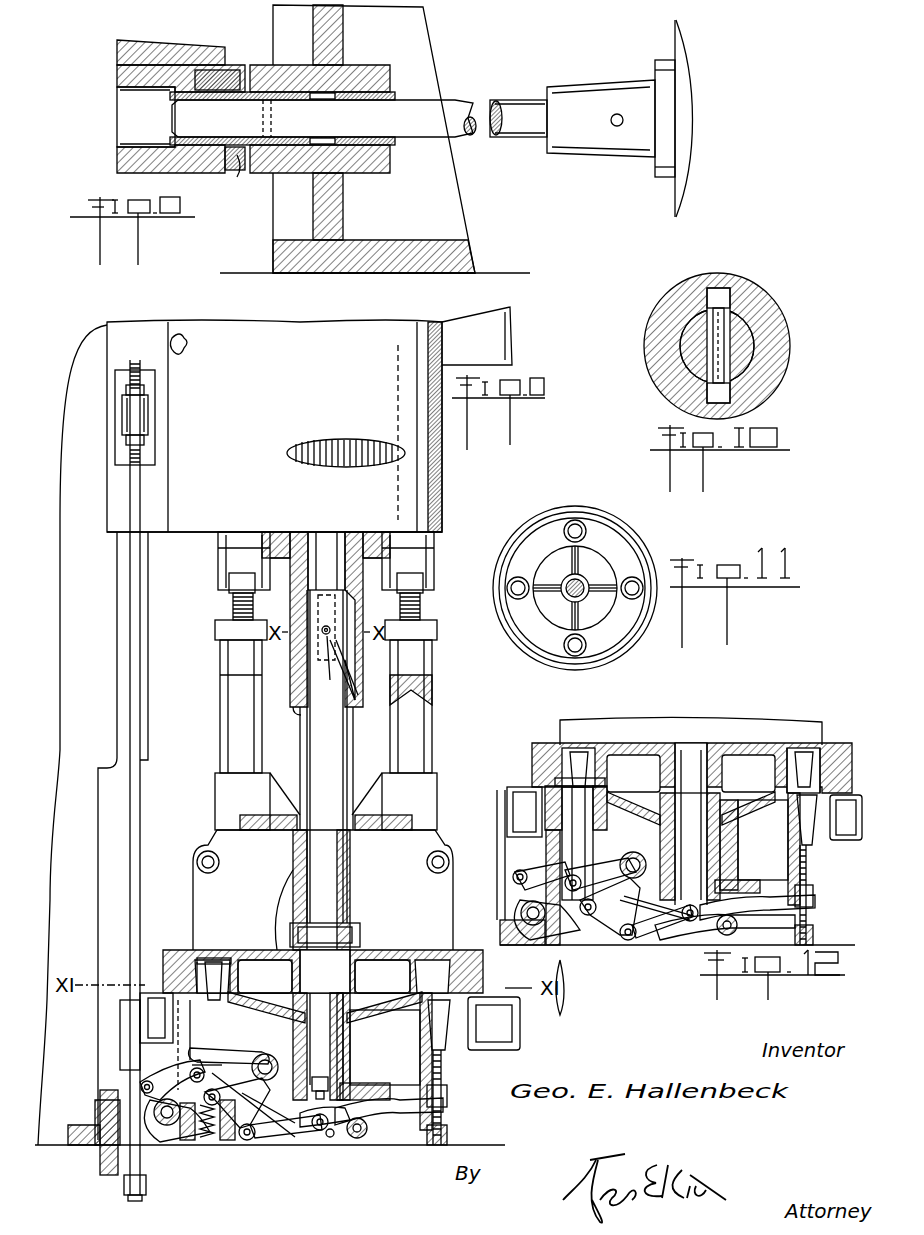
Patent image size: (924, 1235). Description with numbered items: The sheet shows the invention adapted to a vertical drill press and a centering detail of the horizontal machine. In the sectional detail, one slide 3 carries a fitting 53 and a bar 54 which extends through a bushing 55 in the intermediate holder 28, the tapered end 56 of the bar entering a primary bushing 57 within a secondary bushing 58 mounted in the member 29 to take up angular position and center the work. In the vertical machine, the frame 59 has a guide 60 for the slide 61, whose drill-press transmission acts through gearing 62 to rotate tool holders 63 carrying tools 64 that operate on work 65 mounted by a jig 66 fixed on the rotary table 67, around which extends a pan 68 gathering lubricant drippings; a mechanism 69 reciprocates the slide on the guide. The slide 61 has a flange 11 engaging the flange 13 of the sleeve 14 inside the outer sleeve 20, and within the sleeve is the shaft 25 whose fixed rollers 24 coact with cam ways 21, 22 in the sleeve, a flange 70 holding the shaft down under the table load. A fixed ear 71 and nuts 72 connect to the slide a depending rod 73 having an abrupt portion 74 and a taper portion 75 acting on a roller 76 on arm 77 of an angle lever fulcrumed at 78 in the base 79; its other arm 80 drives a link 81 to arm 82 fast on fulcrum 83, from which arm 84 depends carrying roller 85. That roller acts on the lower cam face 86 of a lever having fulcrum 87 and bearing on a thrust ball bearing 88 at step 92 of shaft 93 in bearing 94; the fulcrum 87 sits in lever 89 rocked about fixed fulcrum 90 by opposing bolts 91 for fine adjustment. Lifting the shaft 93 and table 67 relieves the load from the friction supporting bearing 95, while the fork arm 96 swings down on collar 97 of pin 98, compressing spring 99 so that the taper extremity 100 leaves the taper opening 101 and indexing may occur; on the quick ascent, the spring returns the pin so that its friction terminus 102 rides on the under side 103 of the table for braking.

In FIG. 8, the slide 3 is at (675, 200).
In FIG. 9, the flange 11 is at (226, 553).
In FIG. 9, the flange 13 is at (294, 532).
In FIG. 9, the sleeve 14 is at (296, 708).
In FIG. 10, the sleeve 14 is at (792, 330).
In FIG. 9, the supplemental sleeve 20 is at (355, 675).
In FIG. 10, the supplemental sleeve 20 is at (789, 375).
In FIG. 9, the slot 21 is at (337, 600).
In FIG. 9, the slot 22 is at (329, 675).
In FIG. 9, the rollers 24 is at (322, 634).
In FIG. 10, the rollers 24 is at (730, 295).
In FIG. 9, the shaft 25 is at (330, 630).
In FIG. 10, the shaft 25 is at (735, 310).
In FIG. 8, the holder 28 is at (466, 212).
In FIG. 8, the member 29 is at (117, 52).
In FIG. 8, the fitting 53 is at (655, 165).
In FIG. 8, the bar 54 is at (533, 140).
In FIG. 8, the bushing 55 is at (395, 145).
In FIG. 8, the tapered end 56 is at (172, 118).
In FIG. 8, the primary bushing 57 is at (237, 172).
In FIG. 8, the secondary bushing 58 is at (117, 155).
In FIG. 9, the frame 59 is at (87, 370).
In FIG. 9, the guide 60 is at (117, 625).
In FIG. 9, the slide 61 is at (418, 482).
In FIG. 9, the gearing 62 is at (350, 470).
In FIG. 9, the tool holders 63 is at (233, 600).
In FIG. 9, the tools 64 is at (430, 680).
In FIG. 9, the work 65 is at (222, 706).
In FIG. 9, the auxiliary table or jig 66 is at (210, 838).
In FIG. 12, the auxiliary table or jig 66 is at (765, 720).
In FIG. 9, the rotary table 67 is at (205, 960).
In FIG. 11, the rotary table 67 is at (650, 545).
In FIG. 12, the rotary table 67 is at (836, 743).
In FIG. 9, the circular vessel or pan 68 is at (140, 1020).
In FIG. 12, the circular vessel or pan 68 is at (855, 840).
In FIG. 9, the mechanism 69 is at (184, 358).
In FIG. 9, the flange 70 is at (355, 925).
In FIG. 9, the fixed ear 71 is at (148, 418).
In FIG. 9, the nuts 72 is at (144, 392).
In FIG. 9, the rod 73 is at (142, 485).
In FIG. 9, the abrupt cam portion 74 is at (120, 1088).
In FIG. 12, the abrupt cam portion 74 is at (676, 867).
In FIG. 9, the taper cam portion 75 is at (155, 1140).
In FIG. 12, the taper cam portion 75 is at (505, 799).
In FIG. 9, the roller 76 is at (128, 1070).
In FIG. 12, the roller 76 is at (527, 812).
In FIG. 9, the arm 77 is at (145, 1080).
In FIG. 9, the fulcrum 78 is at (130, 1148).
In FIG. 12, the fulcrum 78 is at (522, 918).
In FIG. 9, the base 79 is at (190, 1130).
In FIG. 9, the arm 80 is at (182, 1122).
In FIG. 12, the arm 80 is at (558, 887).
In FIG. 9, the link 81 is at (230, 1117).
In FIG. 12, the link 81 is at (600, 920).
In FIG. 9, the arm 82 is at (265, 1135).
In FIG. 12, the arm 82 is at (662, 913).
In FIG. 9, the fulcrum 83 is at (278, 1054).
In FIG. 12, the fulcrum 83 is at (650, 854).
In FIG. 9, the arm 84 is at (320, 1133).
In FIG. 12, the arm 84 is at (725, 927).
In FIG. 9, the roller 85 is at (247, 1140).
In FIG. 12, the roller 85 is at (632, 940).
In FIG. 9, the cam face 86 is at (280, 1130).
In FIG. 12, the cam face 86 is at (640, 940).
In FIG. 9, the fulcrum 87 is at (333, 1137).
In FIG. 12, the fulcrum 87 is at (690, 930).
In FIG. 9, the thrust ball bearing 88 is at (362, 1083).
In FIG. 12, the thrust ball bearing 88 is at (700, 905).
In FIG. 9, the lever 89 is at (360, 1130).
In FIG. 12, the lever 89 is at (762, 898).
In FIG. 9, the fixed fulcrum 90 is at (365, 1135).
In FIG. 12, the fixed fulcrum 90 is at (737, 922).
In FIG. 9, the bolts 91 is at (447, 1095).
In FIG. 12, the bolts 91 is at (813, 890).
In FIG. 9, the step or seat 92 is at (317, 1077).
In FIG. 9, the shaft 93 is at (325, 1027).
In FIG. 11, the shaft 93 is at (583, 582).
In FIG. 12, the shaft 93 is at (705, 772).
In FIG. 9, the bearing 94 is at (368, 1032).
In FIG. 12, the bearing 94 is at (738, 822).
In FIG. 9, the friction supporting bearing 95 is at (400, 992).
In FIG. 9, the fork terminus arm 96 is at (232, 1056).
In FIG. 12, the fork terminus arm 96 is at (598, 862).
In FIG. 9, the collar 97 is at (190, 1062).
In FIG. 12, the collar 97 is at (578, 843).
In FIG. 9, the pin 98 is at (242, 984).
In FIG. 12, the pin 98 is at (585, 830).
In FIG. 9, the compression spring 99 is at (204, 1135).
In FIG. 9, the taper upper extremity 100 is at (225, 962).
In FIG. 12, the taper upper extremity 100 is at (605, 782).
In FIG. 9, the taper opening 101 is at (196, 963).
In FIG. 11, the taper opening 101 is at (635, 580).
In FIG. 12, the taper opening 101 is at (808, 752).
In FIG. 9, the friction pin terminus 102 is at (215, 965).
In FIG. 12, the friction pin terminus 102 is at (580, 752).
In FIG. 9, the under side 103 is at (448, 1025).
In FIG. 12, the under side 103 is at (819, 820).